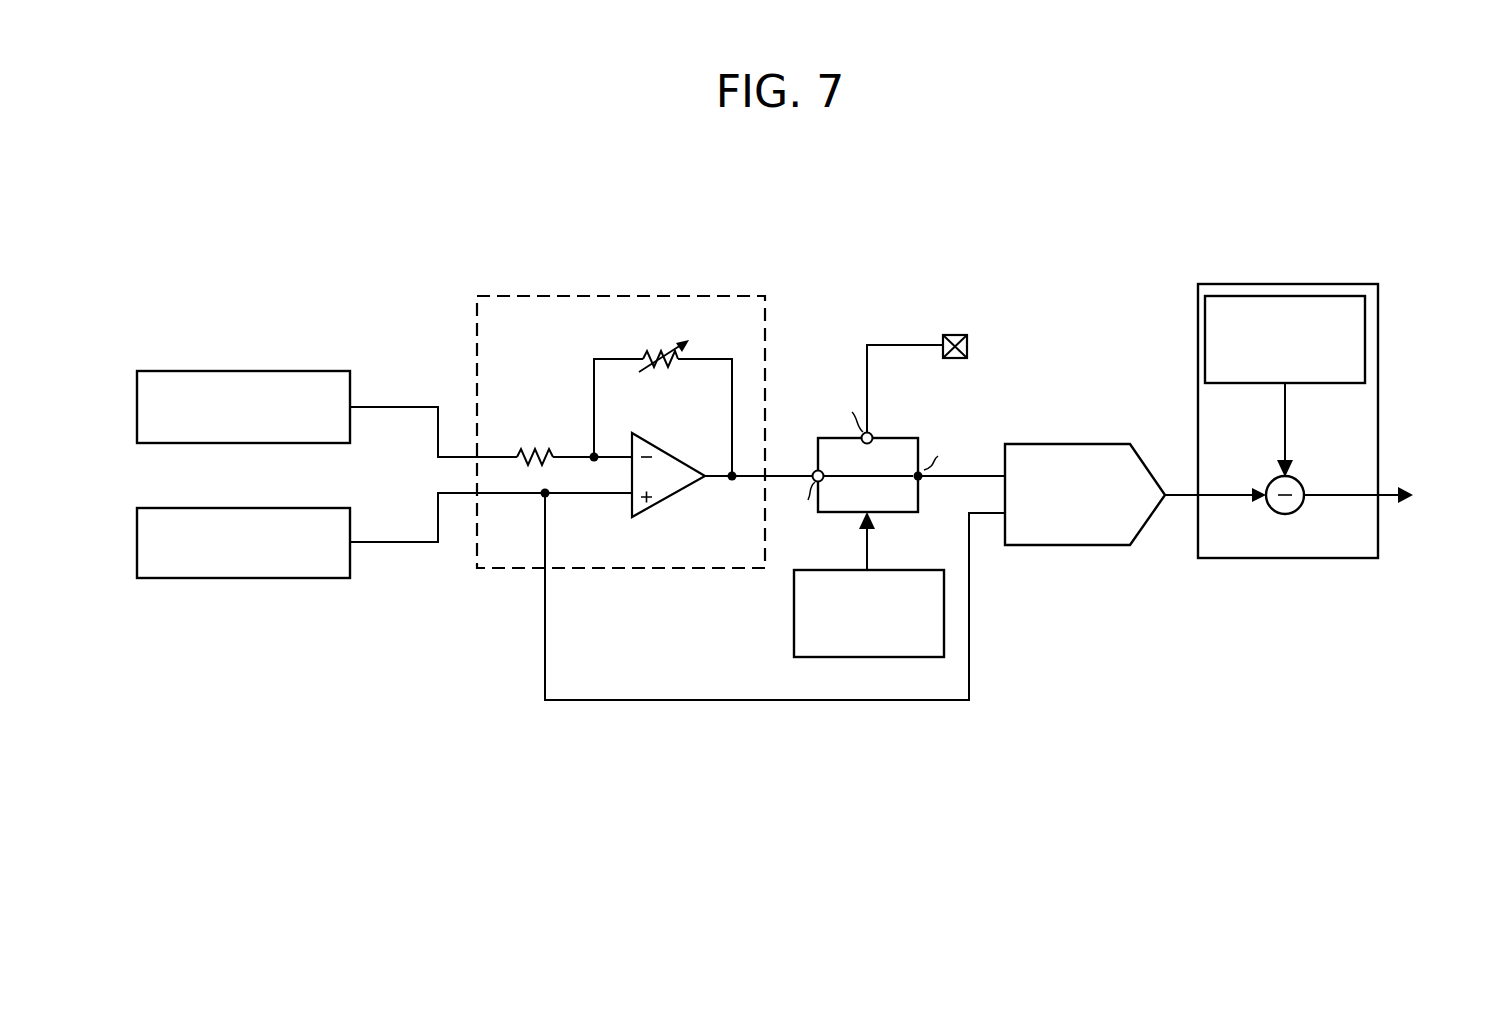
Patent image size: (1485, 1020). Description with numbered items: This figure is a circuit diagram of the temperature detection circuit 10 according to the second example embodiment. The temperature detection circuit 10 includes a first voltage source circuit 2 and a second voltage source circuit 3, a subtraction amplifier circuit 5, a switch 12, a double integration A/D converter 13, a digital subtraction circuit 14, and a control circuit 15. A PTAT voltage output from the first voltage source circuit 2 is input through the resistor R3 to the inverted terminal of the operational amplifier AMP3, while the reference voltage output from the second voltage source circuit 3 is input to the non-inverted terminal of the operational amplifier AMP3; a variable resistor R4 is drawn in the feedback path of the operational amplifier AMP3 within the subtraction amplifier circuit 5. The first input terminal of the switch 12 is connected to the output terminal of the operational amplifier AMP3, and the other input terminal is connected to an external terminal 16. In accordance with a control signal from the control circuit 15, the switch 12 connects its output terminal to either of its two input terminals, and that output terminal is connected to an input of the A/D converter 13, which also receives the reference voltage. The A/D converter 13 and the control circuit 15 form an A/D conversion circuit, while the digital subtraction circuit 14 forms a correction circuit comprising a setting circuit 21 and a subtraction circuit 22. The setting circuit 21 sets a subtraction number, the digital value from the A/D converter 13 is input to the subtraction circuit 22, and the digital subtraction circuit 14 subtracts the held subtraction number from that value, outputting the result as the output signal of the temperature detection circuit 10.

The first voltage source circuit 2 is at (308, 371).
The second voltage source circuit 3 is at (309, 580).
The subtraction amplifier circuit 5 is at (701, 296).
The temperature detection circuit 10 is at (850, 246).
The switch 12 is at (899, 437).
The double integration A/D converter 13 is at (1105, 443).
The digital subtraction circuit 14 is at (1329, 285).
The control circuit 15 is at (794, 621).
The external terminal 16 is at (958, 334).
The setting circuit 21 is at (1366, 307).
The subtraction circuit 22 is at (1300, 478).
The resistor R3 is at (535, 443).
The resistor R4 is at (664, 345).
The operational amplifier AMP3 is at (659, 446).